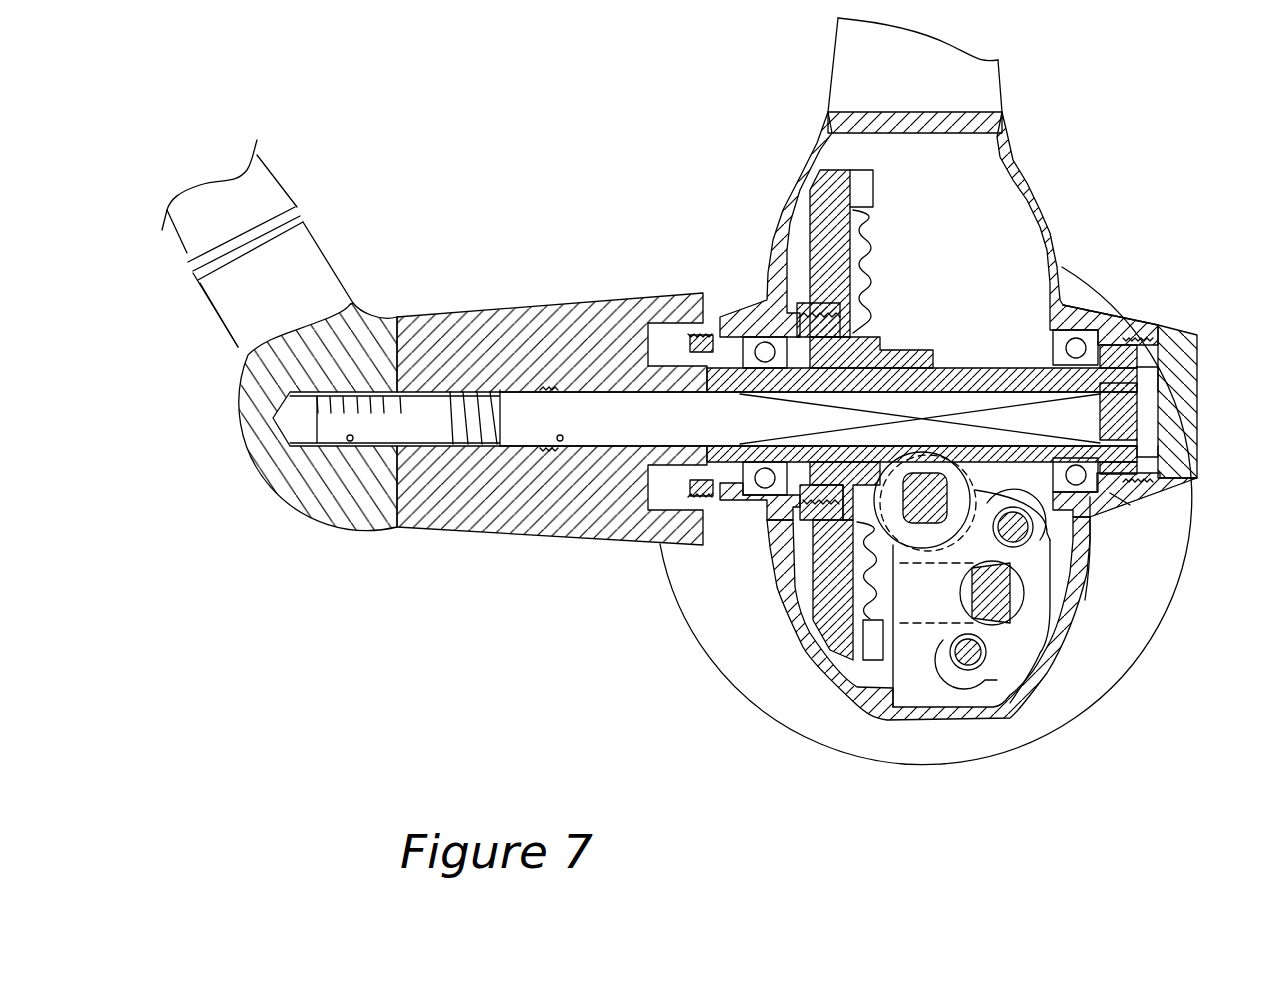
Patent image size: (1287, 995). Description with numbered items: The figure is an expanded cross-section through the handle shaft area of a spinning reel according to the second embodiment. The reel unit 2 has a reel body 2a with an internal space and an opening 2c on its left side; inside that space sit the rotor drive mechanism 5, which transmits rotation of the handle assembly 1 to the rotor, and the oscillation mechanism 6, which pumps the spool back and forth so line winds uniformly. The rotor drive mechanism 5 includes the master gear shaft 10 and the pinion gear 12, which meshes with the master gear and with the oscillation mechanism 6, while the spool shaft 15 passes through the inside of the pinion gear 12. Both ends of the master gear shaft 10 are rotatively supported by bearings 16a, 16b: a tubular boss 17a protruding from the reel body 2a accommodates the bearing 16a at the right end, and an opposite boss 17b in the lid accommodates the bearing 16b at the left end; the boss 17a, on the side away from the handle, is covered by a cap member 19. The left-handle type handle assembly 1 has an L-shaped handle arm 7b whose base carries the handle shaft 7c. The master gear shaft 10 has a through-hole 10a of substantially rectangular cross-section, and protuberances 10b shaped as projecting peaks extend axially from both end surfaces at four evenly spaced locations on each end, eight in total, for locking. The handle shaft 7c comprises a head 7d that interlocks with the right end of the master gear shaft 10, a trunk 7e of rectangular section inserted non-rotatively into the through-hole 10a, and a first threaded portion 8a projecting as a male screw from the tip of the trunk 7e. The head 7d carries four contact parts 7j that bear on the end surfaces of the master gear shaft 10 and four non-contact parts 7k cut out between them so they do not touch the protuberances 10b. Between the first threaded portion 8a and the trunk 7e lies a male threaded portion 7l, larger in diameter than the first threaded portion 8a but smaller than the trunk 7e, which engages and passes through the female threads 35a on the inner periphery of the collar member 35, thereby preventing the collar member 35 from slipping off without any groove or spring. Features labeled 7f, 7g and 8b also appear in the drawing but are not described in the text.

The handle assembly 1 is at (370, 242).
The reel unit 2 is at (1048, 183).
The reel body 2a is at (970, 713).
The opening 2c is at (877, 720).
The rotor drive mechanism 5 is at (895, 257).
The oscillation mechanism 6 is at (931, 678).
The handle arm 7b is at (316, 227).
The handle shaft 7c is at (593, 403).
The head 7d is at (1127, 382).
The trunk 7e is at (912, 408).
The knob end 7f is at (253, 440).
The handle tube 7g is at (217, 302).
The contact parts 7j is at (1142, 407).
The non-contact parts 7k is at (1142, 449).
The male threaded portion 7l is at (560, 441).
The first threaded portion 8a is at (333, 420).
The screw threads 8b is at (350, 441).
The master gear shaft 10 is at (984, 372).
The through-hole 10a is at (1023, 390).
The protuberances 10b is at (1197, 482).
The pinion gear 12 is at (1055, 660).
The spool shaft 15 is at (920, 505).
The bearing 16a is at (1090, 497).
The bearing 16b is at (768, 533).
The tubular boss 17a is at (1110, 493).
The boss 17b is at (767, 522).
The cap member 19 is at (1178, 347).
The collar member 35 is at (523, 298).
The female threads 35a is at (580, 540).